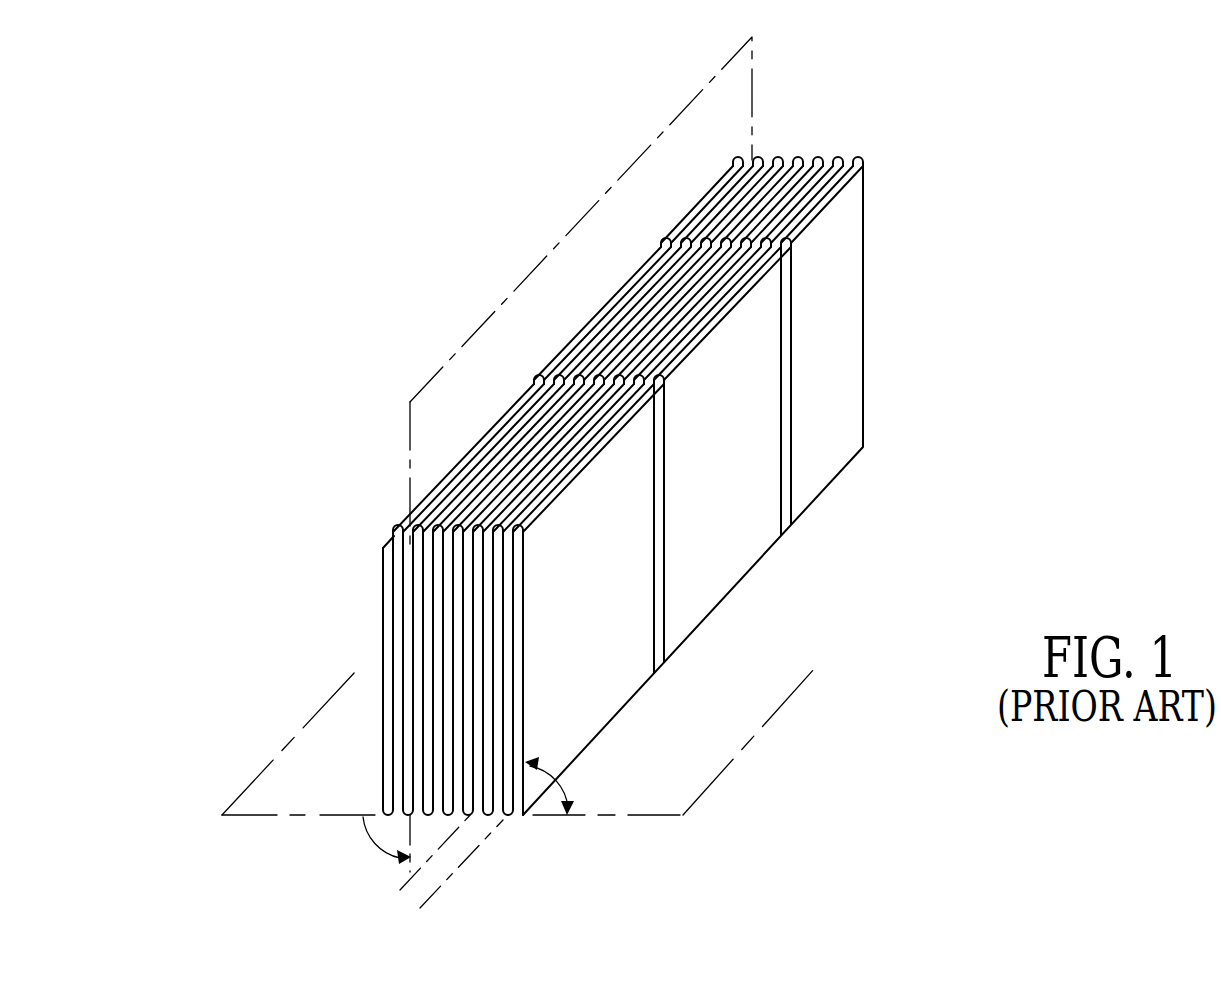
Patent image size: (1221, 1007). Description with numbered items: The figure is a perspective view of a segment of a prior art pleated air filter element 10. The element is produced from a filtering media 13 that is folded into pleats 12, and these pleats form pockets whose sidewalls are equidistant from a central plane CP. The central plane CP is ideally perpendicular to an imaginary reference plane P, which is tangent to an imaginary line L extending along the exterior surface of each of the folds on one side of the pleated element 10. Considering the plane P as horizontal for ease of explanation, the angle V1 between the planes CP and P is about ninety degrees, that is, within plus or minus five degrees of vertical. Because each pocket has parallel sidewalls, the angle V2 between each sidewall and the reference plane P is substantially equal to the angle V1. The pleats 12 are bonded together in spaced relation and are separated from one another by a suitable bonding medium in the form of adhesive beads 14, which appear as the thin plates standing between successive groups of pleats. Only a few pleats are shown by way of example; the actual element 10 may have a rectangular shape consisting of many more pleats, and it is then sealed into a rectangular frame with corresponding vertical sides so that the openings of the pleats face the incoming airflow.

The filter element 10 is at (592, 486).
The pleats 12 is at (396, 526).
The filtering media 13 is at (707, 553).
The adhesive beads 14 is at (791, 481).
The central plane CP is at (416, 396).
The reference plane P is at (290, 817).
The imaginary line L is at (477, 850).
The angle between planes CP and P V1 is at (362, 848).
The angle between sidewall and reference plane V2 is at (563, 793).